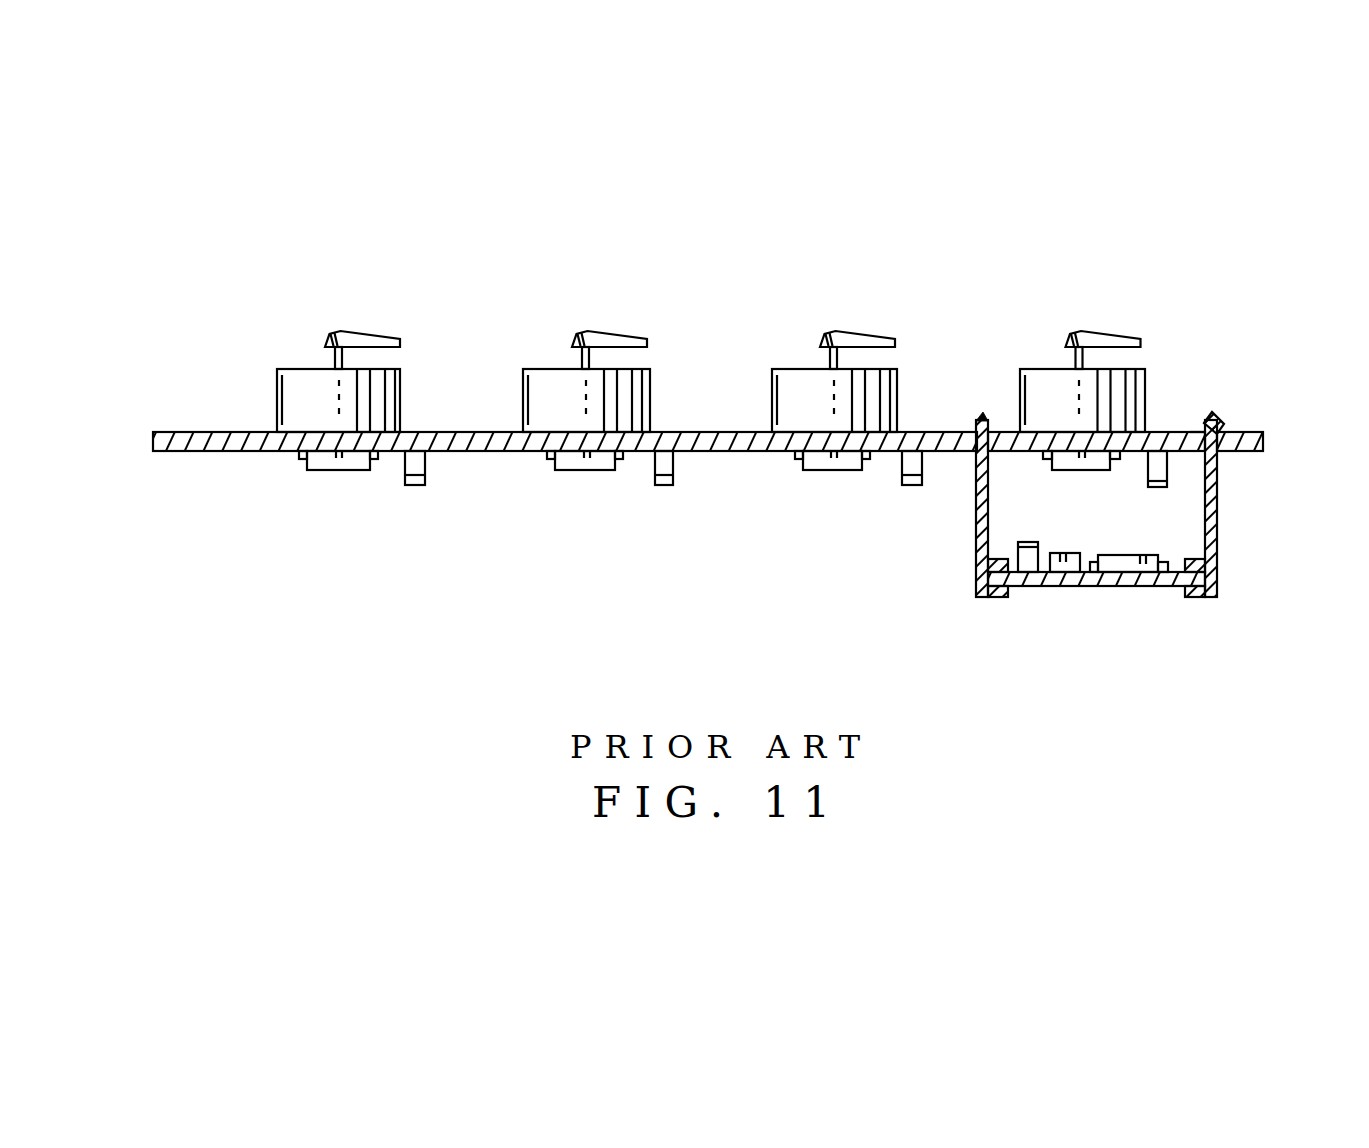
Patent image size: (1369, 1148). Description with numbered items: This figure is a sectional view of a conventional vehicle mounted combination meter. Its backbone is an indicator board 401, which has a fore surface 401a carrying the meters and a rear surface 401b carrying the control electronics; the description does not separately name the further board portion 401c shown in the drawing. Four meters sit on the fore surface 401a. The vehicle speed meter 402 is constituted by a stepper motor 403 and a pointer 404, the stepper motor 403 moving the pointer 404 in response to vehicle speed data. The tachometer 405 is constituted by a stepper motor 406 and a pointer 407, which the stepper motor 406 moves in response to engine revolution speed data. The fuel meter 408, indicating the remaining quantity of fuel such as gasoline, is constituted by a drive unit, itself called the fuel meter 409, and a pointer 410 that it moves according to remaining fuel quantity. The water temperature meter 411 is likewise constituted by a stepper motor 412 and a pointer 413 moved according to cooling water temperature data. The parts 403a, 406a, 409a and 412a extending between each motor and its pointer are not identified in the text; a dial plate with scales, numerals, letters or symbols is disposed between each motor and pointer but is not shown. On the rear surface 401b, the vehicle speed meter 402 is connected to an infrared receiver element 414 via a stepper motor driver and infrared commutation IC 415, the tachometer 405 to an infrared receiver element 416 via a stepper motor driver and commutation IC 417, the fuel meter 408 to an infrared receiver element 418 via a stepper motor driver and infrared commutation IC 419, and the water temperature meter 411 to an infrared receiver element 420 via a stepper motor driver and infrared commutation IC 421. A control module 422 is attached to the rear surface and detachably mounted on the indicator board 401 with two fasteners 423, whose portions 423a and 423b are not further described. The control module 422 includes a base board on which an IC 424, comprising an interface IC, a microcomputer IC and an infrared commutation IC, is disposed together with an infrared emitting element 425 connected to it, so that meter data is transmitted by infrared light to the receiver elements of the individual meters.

The indicator board 401 is at (208, 432).
The fore surface of indicator board 401a is at (173, 432).
The rear surface of indicator board 401b is at (177, 452).
The end portion of printed circuit board 401c is at (1205, 432).
The vehicle speed meter 402 is at (306, 369).
The stepper motor 403 is at (277, 393).
The switch shaft 403a is at (345, 354).
The pointer 404 is at (370, 333).
The tachometer 405 is at (541, 369).
The stepper motor 406 is at (523, 396).
The switch shaft 406a is at (593, 354).
The pointer 407 is at (619, 333).
The fuel meter 408 is at (788, 369).
The fuel meter (drive unit) 409 is at (772, 400).
The switch shaft 409a is at (840, 356).
The pointer 410 is at (857, 333).
The water temperature meter 411 is at (1040, 369).
The stepper motor 412 is at (1020, 392).
The switch shaft 412a is at (1086, 354).
The pointer 413 is at (1118, 333).
The infrared receiver element 414 is at (415, 478).
The stepper motor driver and infrared commutation IC 415 is at (336, 470).
The infrared receiver element 416 is at (665, 478).
The stepper motor driver and commutation IC 417 is at (585, 470).
The infrared receiver element 418 is at (907, 476).
The stepper motor driver and infrared commutation IC 419 is at (827, 470).
The infrared receiver element 420 is at (1168, 470).
The stepper motor driver and infrared commutation IC 421 is at (1082, 470).
The control module 422 is at (1135, 586).
The fastener 423 is at (976, 517).
The bracket foot portion 423a is at (998, 597).
The bracket top end portion 423b is at (982, 422).
The IC 424 is at (1095, 586).
The infrared emitting element 425 is at (1028, 542).